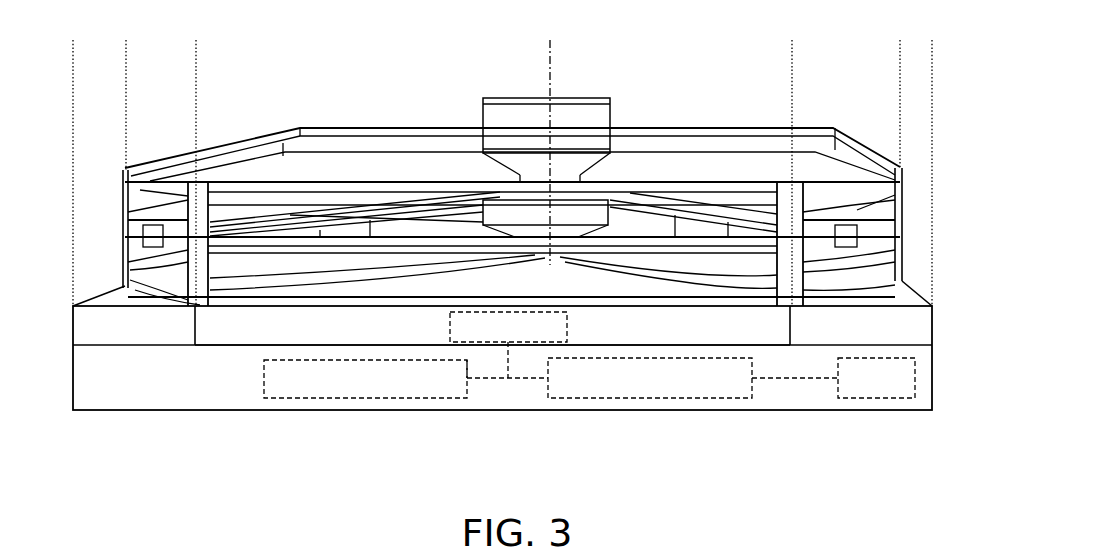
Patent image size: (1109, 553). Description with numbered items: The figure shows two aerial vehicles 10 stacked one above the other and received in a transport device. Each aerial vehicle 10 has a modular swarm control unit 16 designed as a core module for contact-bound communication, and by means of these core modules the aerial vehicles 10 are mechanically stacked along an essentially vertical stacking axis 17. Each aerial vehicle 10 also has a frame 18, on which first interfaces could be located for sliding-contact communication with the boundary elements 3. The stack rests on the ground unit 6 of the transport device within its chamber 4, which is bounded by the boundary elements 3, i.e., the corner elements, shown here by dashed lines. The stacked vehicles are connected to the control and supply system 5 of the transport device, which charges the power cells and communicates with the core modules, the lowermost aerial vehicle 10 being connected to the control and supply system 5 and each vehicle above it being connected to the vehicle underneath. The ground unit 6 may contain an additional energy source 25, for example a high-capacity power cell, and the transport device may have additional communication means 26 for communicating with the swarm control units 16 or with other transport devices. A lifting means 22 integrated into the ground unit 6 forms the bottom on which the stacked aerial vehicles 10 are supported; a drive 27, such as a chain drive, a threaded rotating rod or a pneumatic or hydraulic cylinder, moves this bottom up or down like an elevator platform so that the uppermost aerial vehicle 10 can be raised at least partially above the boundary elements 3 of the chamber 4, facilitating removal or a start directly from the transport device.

The boundary element 3 is at (207, 52).
The chamber 4 is at (223, 113).
The control and supply system 5 is at (682, 385).
The ground unit 6 is at (143, 385).
The aerial vehicle 10 is at (862, 136).
The swarm control unit 16 is at (520, 218).
The stacking axis 17 is at (550, 78).
The frame 18 is at (268, 142).
The lifting means 22 is at (253, 333).
The additional energy source 25 is at (333, 380).
The communication means 26 is at (855, 385).
The drive 27 is at (496, 332).